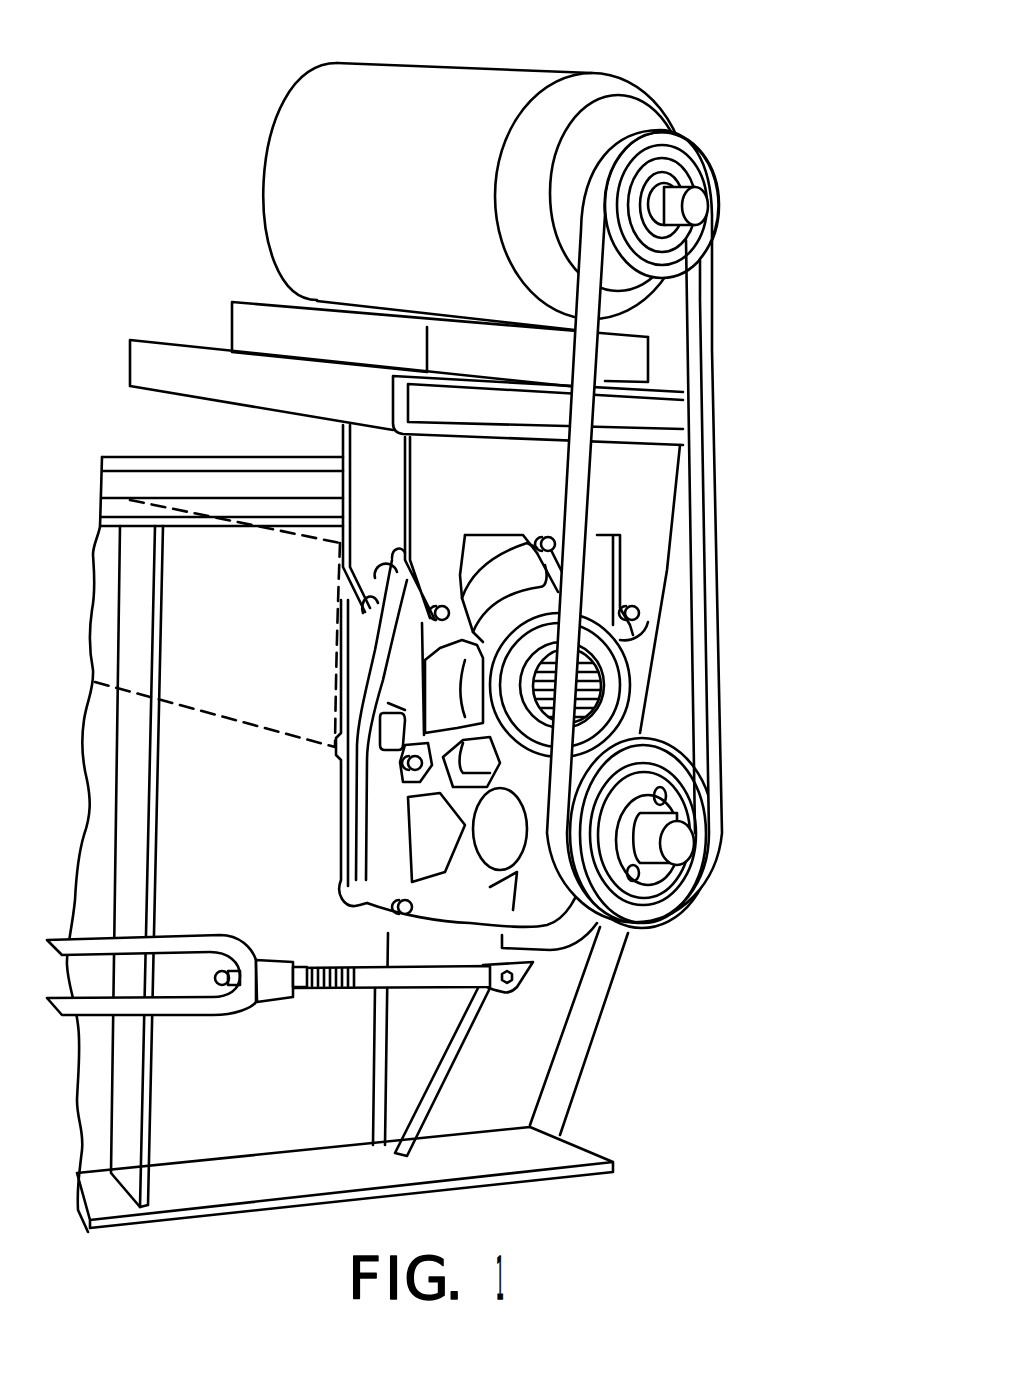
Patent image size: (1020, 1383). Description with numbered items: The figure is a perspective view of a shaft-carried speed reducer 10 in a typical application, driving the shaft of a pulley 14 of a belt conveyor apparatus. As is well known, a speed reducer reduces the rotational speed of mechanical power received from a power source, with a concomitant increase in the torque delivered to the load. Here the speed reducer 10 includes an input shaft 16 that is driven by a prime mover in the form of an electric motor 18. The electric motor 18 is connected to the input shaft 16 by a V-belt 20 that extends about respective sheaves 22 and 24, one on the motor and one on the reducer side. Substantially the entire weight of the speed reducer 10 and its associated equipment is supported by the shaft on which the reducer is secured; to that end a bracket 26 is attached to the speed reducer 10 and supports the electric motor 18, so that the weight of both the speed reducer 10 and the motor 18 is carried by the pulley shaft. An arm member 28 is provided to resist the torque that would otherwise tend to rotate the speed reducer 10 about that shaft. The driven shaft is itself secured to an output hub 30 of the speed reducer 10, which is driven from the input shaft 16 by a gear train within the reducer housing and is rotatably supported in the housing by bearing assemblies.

The shaft-carried speed reducer 10 is at (387, 815).
The pulley 14 is at (233, 663).
The input shaft 16 is at (680, 845).
The electric motor 18 is at (430, 97).
The V-belt 20 is at (712, 553).
The sheave 22 is at (697, 163).
The sheave 24 is at (660, 907).
The bracket 26 is at (643, 483).
The arm member 28 is at (273, 978).
The output hub 30 is at (623, 663).